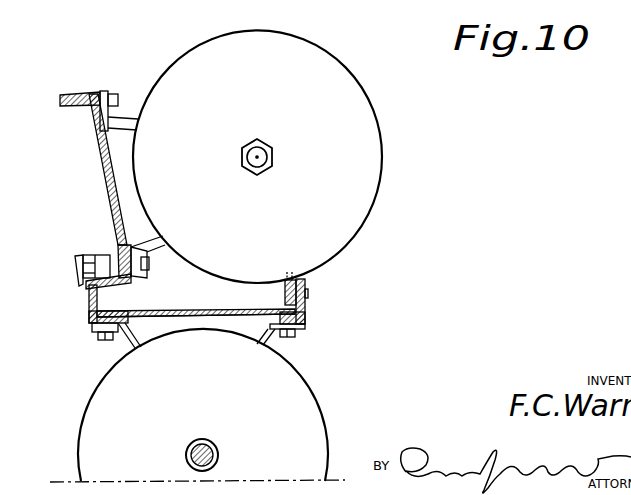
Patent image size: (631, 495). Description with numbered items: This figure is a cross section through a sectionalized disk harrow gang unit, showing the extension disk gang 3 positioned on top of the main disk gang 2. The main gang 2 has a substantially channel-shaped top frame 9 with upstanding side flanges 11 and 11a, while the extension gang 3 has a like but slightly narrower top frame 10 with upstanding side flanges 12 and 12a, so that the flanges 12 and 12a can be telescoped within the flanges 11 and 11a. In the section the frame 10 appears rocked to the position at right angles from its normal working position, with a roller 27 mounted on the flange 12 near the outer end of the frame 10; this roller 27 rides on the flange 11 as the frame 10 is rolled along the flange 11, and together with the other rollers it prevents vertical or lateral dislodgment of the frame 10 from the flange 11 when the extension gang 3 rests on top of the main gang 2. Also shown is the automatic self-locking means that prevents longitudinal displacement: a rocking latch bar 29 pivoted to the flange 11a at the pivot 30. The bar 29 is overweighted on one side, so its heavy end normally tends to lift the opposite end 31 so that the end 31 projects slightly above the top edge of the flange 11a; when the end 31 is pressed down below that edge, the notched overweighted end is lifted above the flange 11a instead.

The main disk gang 2 is at (203, 405).
The extension disk gang 3 is at (257, 156).
The top frame 9 is at (183, 320).
The top frame 10 is at (110, 192).
The upstanding side flange 11 is at (88, 301).
The upstanding side flange 11a is at (306, 308).
The upstanding side flange 12 is at (121, 287).
The upstanding side flange 12a is at (73, 92).
The roller 27 is at (87, 257).
The rocking latch bar 29 is at (283, 290).
The pivot 30 is at (308, 291).
The projecting end of latch bar 31 is at (291, 272).